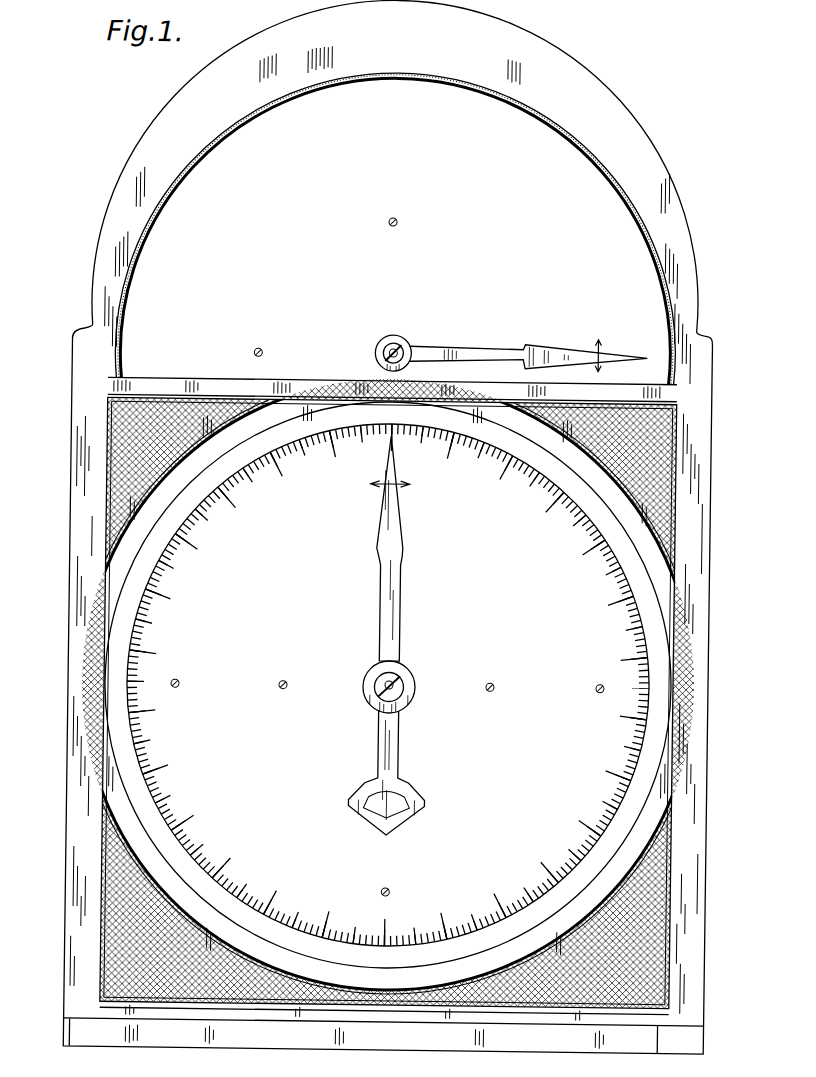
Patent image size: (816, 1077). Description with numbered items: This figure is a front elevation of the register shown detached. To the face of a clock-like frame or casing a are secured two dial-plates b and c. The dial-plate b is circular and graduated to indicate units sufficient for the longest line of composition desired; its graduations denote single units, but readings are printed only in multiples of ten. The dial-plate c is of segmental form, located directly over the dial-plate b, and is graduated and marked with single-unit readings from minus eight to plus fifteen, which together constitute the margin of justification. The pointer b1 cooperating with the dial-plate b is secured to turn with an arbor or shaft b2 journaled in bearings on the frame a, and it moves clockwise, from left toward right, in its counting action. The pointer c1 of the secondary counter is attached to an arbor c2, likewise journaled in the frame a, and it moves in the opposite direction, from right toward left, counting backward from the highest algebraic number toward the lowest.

The frame or casing a is at (711, 659).
The dial-plate b is at (185, 740).
The pointer b1 is at (392, 603).
The arbor or shaft b2 is at (378, 692).
The dial-plate c is at (156, 349).
The pointer c1 is at (481, 361).
The arbor c2 is at (371, 356).